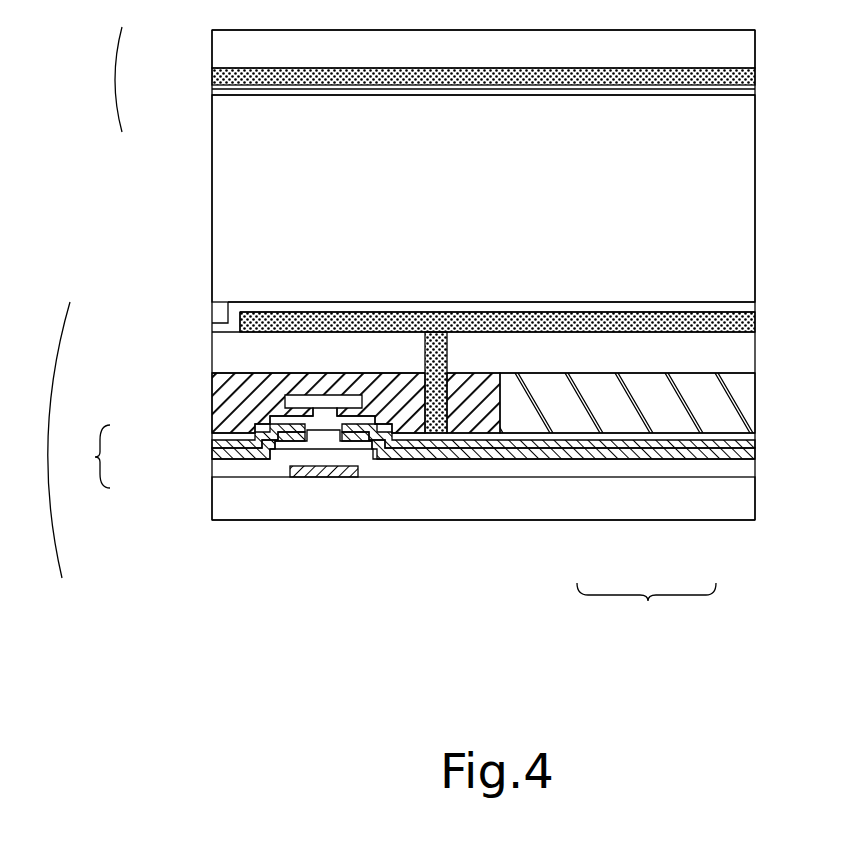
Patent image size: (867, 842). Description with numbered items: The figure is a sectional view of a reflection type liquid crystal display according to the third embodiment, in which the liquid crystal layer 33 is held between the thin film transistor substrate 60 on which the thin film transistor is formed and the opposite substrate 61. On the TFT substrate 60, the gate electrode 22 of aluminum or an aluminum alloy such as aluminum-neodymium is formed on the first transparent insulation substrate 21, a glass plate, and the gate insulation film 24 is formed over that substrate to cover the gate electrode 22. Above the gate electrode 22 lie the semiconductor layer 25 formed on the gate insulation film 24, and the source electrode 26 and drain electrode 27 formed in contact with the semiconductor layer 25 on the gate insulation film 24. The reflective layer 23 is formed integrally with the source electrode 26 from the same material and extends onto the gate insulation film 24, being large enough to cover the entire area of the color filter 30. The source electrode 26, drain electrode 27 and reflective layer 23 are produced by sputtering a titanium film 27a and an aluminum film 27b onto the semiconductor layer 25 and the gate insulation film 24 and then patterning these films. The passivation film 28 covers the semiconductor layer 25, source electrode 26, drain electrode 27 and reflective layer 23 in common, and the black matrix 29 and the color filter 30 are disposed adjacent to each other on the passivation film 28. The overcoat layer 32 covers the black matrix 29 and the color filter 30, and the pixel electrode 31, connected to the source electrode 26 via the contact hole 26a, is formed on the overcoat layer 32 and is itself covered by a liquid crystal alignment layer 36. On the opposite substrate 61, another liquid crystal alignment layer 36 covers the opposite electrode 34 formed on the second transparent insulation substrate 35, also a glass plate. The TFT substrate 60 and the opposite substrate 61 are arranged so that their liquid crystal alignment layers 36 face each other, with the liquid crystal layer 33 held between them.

The first transparent insulation substrate 21 is at (212, 510).
The gate electrode 22 is at (341, 474).
The reflective layer 23 is at (646, 612).
The gate insulation film 24 is at (212, 476).
The semiconductor layer 25 is at (327, 440).
The source electrode 26 is at (408, 458).
The contact hole 26a is at (428, 362).
The drain electrode 27 is at (86, 456).
The titanium film 27a is at (212, 453).
The aluminum film 27b is at (212, 443).
The passivation film 28 is at (212, 435).
The black matrix 29 is at (212, 380).
The color filter 30 is at (745, 410).
The pixel electrode 31 is at (748, 320).
The overcoat layer 32 is at (745, 362).
The liquid crystal layer 33 is at (212, 205).
The opposite electrode 34 is at (212, 86).
The second transparent insulation substrate 35 is at (212, 47).
The liquid crystal alignment layer 36 is at (712, 95).
The thin film transistor substrate 60 is at (39, 440).
The opposite substrate 61 is at (96, 79).